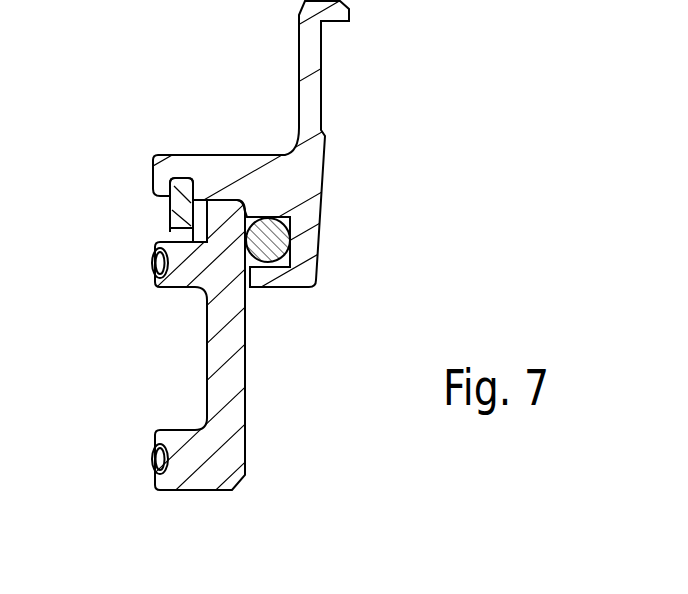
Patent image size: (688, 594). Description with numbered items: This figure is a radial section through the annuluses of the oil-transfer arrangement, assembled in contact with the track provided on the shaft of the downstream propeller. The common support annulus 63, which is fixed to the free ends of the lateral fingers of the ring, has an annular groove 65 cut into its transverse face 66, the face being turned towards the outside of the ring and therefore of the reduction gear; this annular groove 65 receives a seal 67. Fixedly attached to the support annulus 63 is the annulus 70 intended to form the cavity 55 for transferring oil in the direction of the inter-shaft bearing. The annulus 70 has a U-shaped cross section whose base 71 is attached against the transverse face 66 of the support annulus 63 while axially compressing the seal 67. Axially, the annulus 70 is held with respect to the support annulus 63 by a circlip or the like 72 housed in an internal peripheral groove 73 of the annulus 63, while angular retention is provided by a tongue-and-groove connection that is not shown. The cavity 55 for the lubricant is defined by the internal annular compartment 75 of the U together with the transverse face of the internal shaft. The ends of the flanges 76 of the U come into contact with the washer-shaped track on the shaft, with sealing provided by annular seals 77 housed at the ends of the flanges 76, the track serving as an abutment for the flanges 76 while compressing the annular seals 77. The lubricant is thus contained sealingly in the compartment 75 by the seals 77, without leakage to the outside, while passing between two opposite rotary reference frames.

The cavity 55 is at (163, 351).
The support annulus 63 is at (322, 68).
The annular groove 65 is at (292, 242).
The transverse face 66 is at (288, 289).
The seal 67 is at (259, 217).
The annulus 70 is at (248, 344).
The base 71 is at (235, 395).
The circlip 72 is at (167, 214).
The internal peripheral groove 73 is at (183, 190).
The internal annular compartment 75 is at (188, 382).
The flanges 76 is at (207, 480).
The annular seals 77 is at (151, 460).